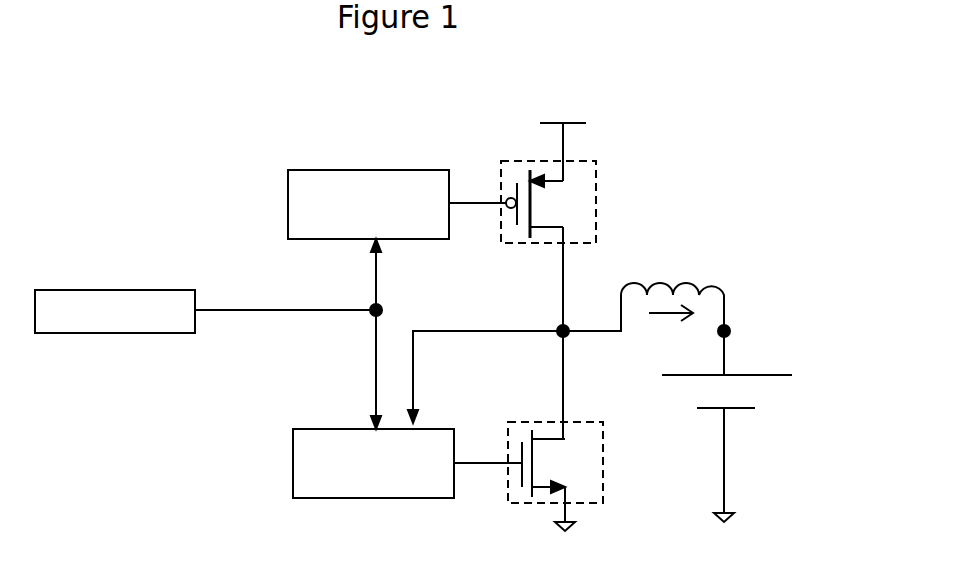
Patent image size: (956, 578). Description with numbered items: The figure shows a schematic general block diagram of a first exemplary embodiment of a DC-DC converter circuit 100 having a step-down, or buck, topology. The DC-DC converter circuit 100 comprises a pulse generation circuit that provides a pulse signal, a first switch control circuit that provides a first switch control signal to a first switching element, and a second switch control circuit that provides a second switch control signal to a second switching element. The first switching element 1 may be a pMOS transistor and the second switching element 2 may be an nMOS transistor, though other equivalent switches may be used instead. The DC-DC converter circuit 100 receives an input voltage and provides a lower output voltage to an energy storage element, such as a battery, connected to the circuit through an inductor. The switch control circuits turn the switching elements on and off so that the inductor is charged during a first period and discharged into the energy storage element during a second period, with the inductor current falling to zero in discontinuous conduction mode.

The DC-DC converter circuit 100 is at (92, 129).
The first switch S1 1 is at (548, 202).
The second switch S2 2 is at (555, 462).